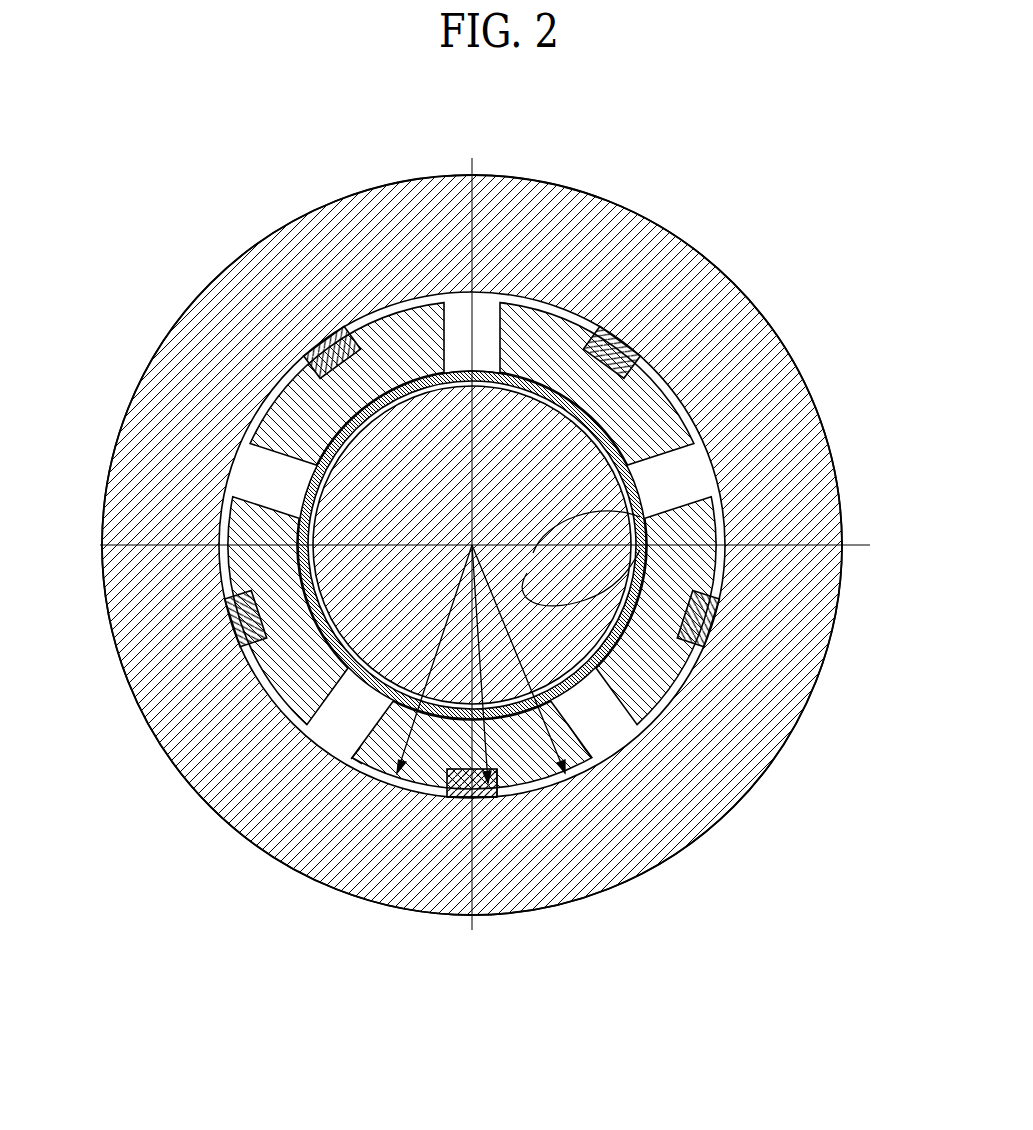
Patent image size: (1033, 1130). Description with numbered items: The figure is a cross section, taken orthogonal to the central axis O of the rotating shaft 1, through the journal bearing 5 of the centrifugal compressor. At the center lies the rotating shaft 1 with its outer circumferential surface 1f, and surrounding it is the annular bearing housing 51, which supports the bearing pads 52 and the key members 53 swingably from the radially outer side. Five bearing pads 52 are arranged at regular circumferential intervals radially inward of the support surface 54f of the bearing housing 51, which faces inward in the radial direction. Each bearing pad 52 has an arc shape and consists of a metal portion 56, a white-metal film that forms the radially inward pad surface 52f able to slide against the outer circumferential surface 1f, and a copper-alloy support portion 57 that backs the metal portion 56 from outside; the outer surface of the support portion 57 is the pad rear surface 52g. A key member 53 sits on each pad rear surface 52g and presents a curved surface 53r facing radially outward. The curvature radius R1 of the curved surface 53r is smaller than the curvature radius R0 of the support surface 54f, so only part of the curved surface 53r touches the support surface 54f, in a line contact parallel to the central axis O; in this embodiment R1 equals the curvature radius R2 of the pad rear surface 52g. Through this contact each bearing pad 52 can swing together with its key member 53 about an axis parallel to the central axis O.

The rotating shaft 1 is at (463, 372).
The outer circumferential surface 1f is at (475, 372).
The journal bearing 5 is at (740, 198).
The bearing housing 51 is at (592, 190).
The bearing pad 52 is at (292, 400).
The key member 53 is at (325, 337).
The pad surface 52f is at (357, 752).
The pad rear surface 52g is at (355, 770).
The curved surface 53r is at (465, 797).
The support surface 54f is at (498, 782).
The metal portion 56 is at (575, 733).
The support portion 57 is at (582, 745).
The central axis O is at (472, 545).
The curvature radius of the support surface R0 is at (645, 533).
The curvature radius of the curved surface R1 is at (515, 548).
The curvature radius of the pad rear surface R2 is at (456, 593).